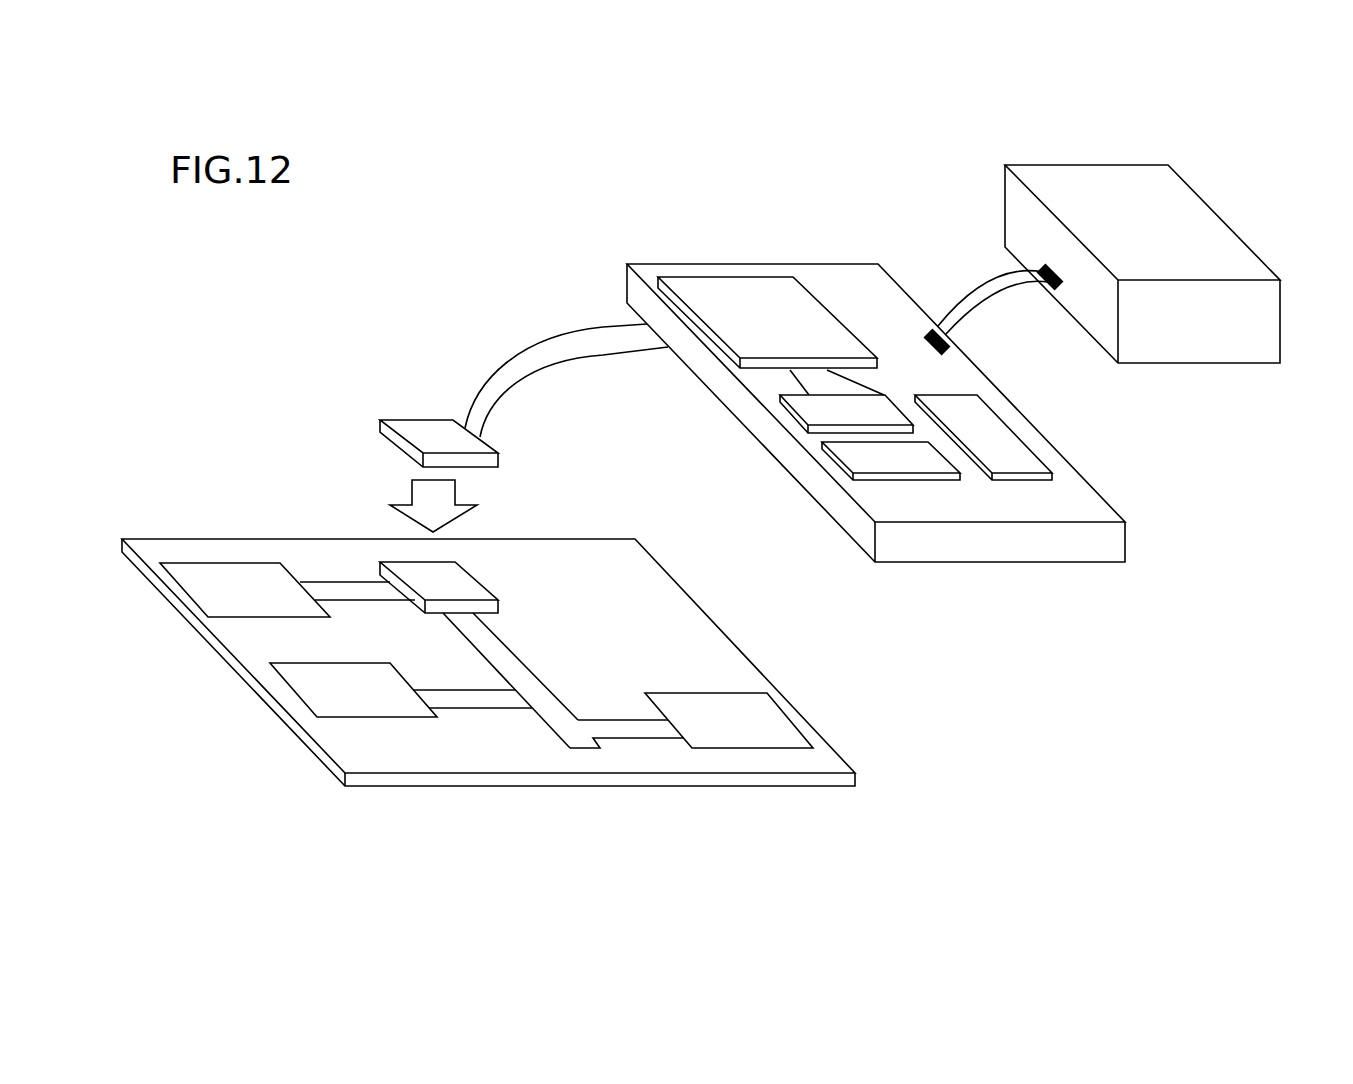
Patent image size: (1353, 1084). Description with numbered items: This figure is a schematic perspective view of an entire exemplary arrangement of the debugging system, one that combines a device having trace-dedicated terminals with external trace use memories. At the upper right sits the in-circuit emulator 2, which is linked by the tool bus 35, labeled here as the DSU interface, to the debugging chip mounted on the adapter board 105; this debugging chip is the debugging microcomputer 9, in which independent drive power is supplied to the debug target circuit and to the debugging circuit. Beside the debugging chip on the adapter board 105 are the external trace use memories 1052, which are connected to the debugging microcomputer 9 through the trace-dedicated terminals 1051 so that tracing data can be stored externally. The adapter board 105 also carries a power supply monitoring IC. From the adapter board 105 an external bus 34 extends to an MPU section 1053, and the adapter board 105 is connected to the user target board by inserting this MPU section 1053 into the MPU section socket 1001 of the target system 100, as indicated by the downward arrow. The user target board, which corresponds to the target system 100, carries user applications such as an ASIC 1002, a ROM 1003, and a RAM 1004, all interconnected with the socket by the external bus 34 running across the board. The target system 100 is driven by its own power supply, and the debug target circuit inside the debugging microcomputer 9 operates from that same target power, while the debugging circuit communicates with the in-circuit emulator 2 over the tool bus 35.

The in-circuit emulator 2 is at (1097, 170).
The debugging microcomputer 9 is at (735, 285).
The external bus 34 is at (330, 580).
The tool bus 35 is at (968, 290).
The target system 100 is at (360, 782).
The adapter board 105 is at (1052, 563).
The MPU section socket 1001 is at (403, 568).
The ASIC 1002 is at (242, 572).
The ROM 1003 is at (300, 677).
The RAM 1004 is at (773, 738).
The trace-dedicated terminals 1051 is at (797, 377).
The external trace use memories 1052 is at (792, 418).
The MPU section 1053 is at (430, 423).